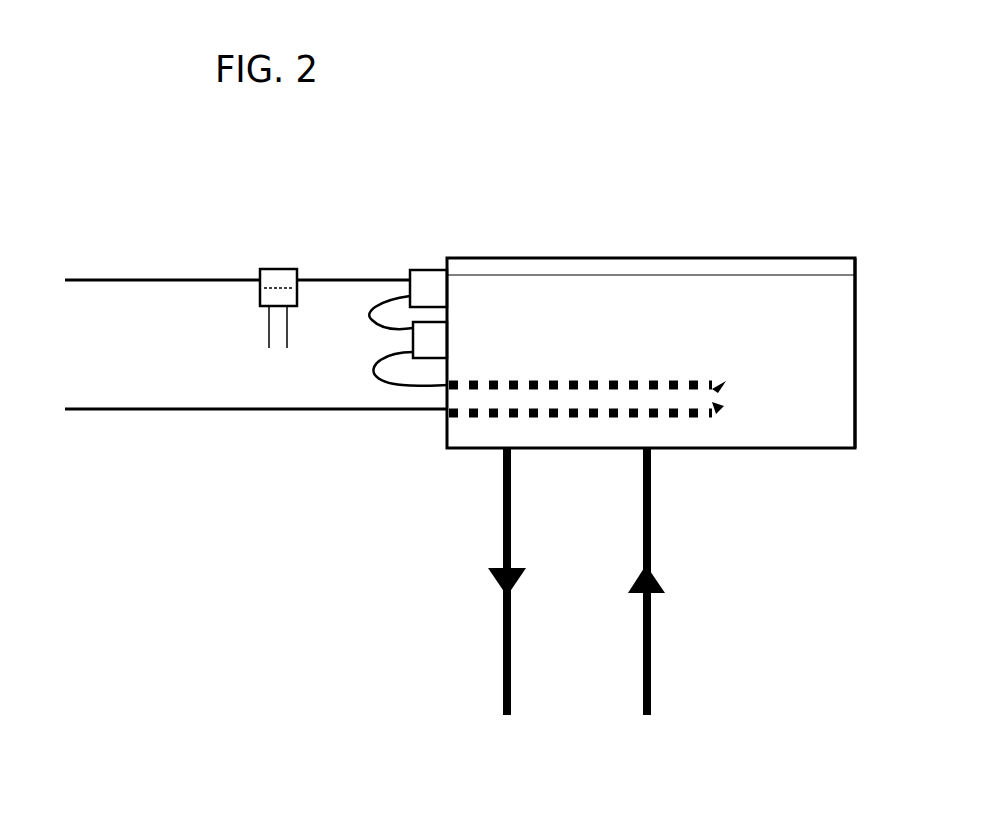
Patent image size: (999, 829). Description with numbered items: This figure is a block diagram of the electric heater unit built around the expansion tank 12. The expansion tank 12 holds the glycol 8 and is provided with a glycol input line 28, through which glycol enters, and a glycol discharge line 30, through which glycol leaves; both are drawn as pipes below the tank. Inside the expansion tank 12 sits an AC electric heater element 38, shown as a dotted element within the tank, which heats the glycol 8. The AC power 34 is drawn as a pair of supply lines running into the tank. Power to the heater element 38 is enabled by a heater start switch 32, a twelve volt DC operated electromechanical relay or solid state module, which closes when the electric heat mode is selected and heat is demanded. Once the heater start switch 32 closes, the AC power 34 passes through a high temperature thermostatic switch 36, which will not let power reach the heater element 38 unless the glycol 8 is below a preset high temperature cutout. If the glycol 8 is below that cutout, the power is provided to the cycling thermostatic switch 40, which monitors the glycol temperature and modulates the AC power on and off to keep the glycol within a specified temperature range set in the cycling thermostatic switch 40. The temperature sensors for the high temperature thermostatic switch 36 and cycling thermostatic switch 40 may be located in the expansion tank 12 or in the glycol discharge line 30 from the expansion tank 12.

The glycol 8 is at (845, 331).
The expansion tank 12 is at (855, 422).
The glycol input line 28 is at (651, 643).
The glycol discharge line 30 is at (501, 633).
The heater start switch 32 is at (271, 268).
The AC power 34 is at (144, 280).
The high temperature thermostatic switch 36 is at (433, 270).
The AC electric heater element 38 is at (722, 390).
The cycling thermostatic switch 40 is at (427, 337).